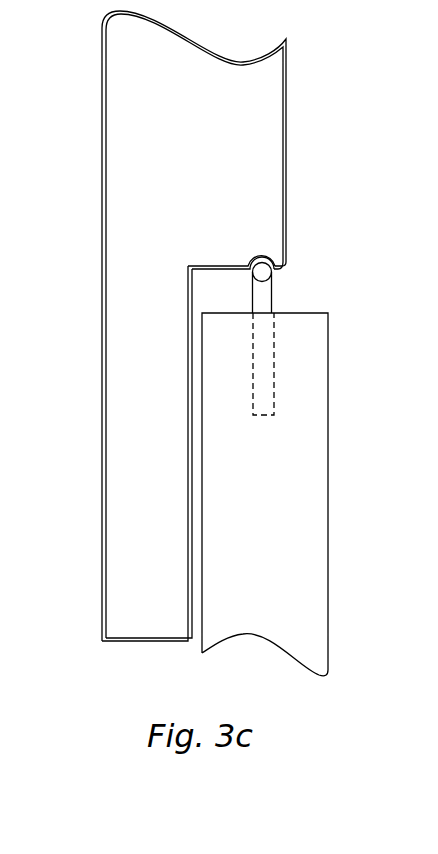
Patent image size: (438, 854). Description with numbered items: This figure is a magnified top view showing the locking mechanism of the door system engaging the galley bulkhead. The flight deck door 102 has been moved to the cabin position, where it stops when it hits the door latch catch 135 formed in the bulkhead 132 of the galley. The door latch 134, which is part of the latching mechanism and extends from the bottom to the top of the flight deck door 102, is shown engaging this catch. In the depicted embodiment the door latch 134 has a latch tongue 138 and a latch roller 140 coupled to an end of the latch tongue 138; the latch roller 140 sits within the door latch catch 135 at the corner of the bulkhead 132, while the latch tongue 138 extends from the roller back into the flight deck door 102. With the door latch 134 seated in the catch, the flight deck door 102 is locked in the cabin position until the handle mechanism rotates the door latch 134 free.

The flight deck door 102 is at (328, 498).
The bulkhead of the galley 132 is at (117, 412).
The door latch 134 is at (304, 268).
The door latch catch 135 is at (257, 263).
The latch tongue 138 is at (272, 305).
The latch roller 140 is at (272, 280).